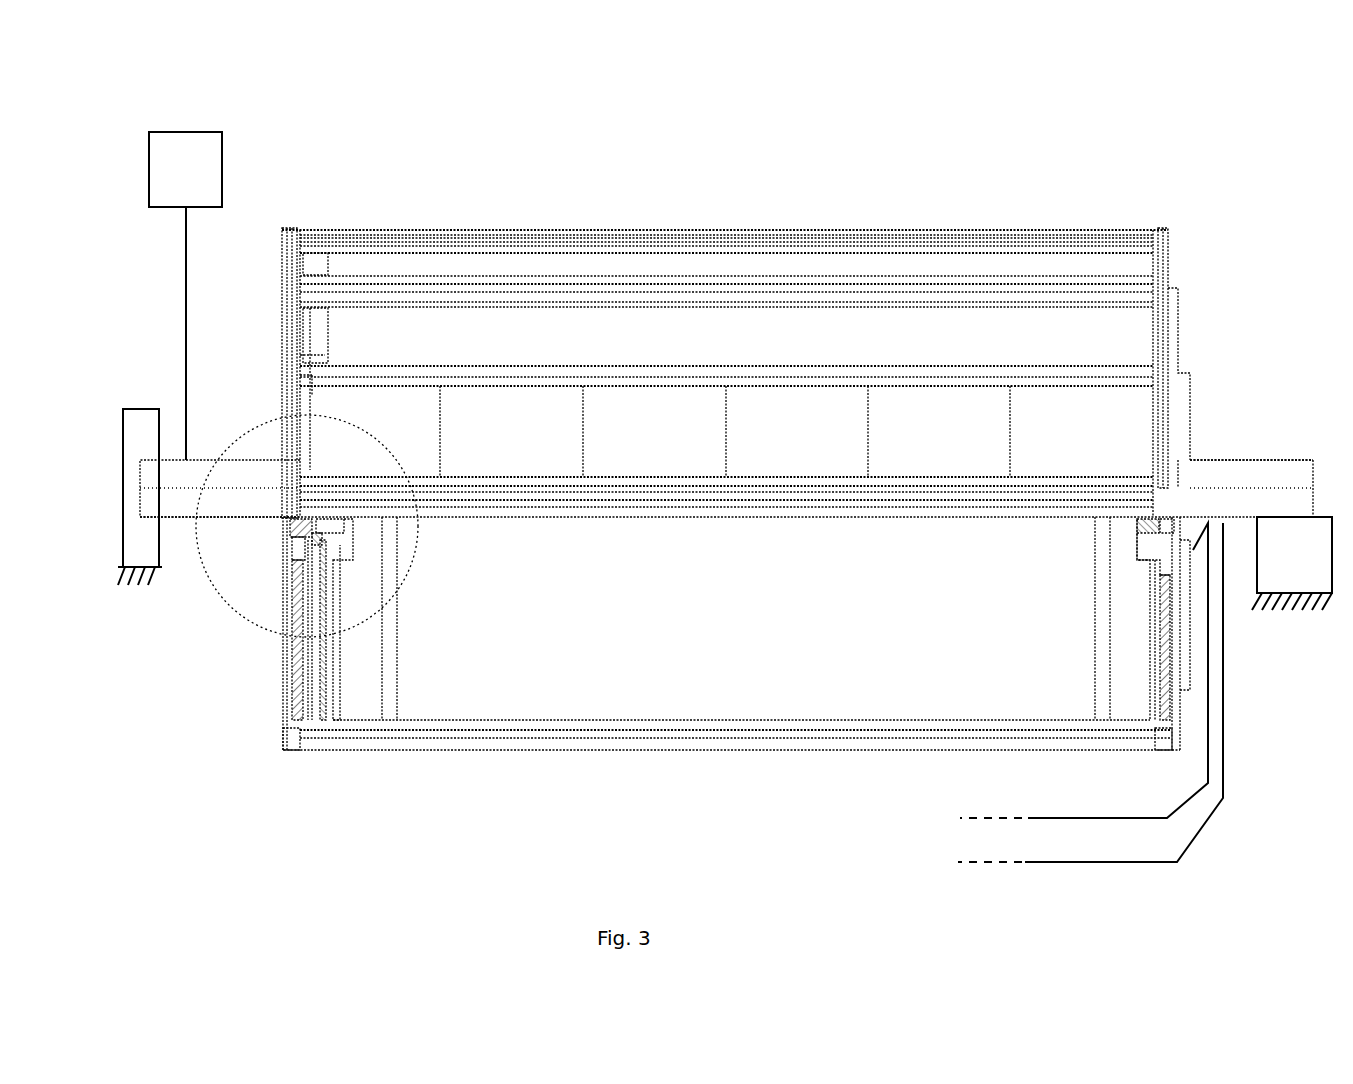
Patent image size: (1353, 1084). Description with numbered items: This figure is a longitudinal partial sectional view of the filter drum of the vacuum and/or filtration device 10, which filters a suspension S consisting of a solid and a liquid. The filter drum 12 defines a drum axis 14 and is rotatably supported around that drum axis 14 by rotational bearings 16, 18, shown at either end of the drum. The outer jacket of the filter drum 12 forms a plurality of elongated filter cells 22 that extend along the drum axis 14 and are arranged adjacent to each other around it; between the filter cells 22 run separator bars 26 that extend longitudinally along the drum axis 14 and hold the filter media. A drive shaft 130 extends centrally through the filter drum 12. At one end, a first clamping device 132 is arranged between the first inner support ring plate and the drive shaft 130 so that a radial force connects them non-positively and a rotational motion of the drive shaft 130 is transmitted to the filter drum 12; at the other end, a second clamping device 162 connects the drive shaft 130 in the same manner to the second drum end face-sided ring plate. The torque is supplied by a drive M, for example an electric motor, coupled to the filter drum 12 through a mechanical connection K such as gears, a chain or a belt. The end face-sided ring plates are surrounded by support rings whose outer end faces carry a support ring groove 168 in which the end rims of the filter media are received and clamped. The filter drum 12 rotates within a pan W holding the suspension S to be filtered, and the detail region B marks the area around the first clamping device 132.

The vacuum and/or filtration device 10 is at (708, 182).
The filter drum 12 is at (1052, 214).
The drum axis 14 is at (1296, 487).
The rotational bearing 16 is at (125, 460).
The rotational bearing 18 is at (1256, 565).
The filter cells 22 is at (485, 415).
The separator bars 26 is at (895, 295).
The drive shaft 130 is at (178, 506).
The first clamping device 132 is at (330, 525).
The second clamping device 162 is at (1157, 525).
The support ring groove 168 is at (290, 228).
The drive M is at (187, 150).
The mechanical connection K is at (186, 290).
The detail region B is at (307, 526).
The suspension S is at (1197, 728).
The pan W is at (1180, 828).